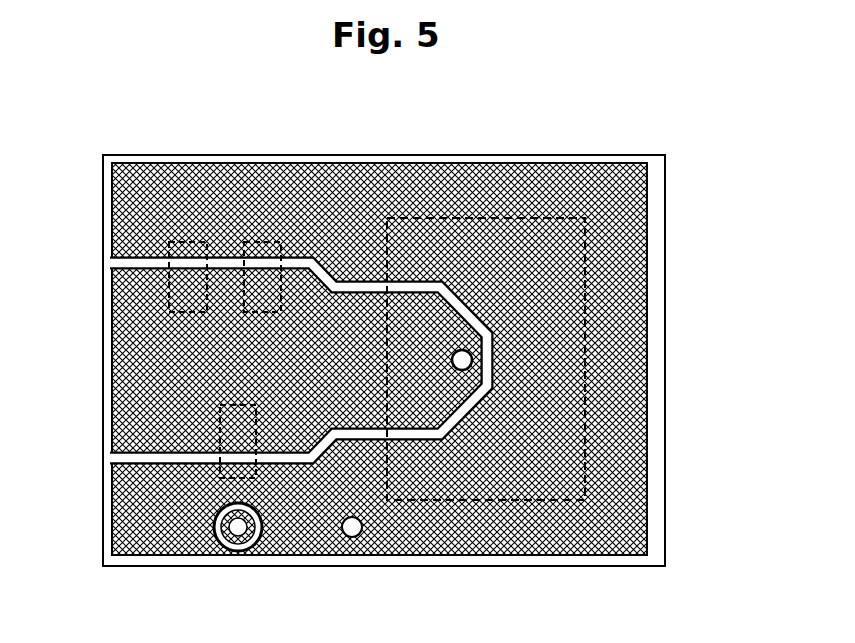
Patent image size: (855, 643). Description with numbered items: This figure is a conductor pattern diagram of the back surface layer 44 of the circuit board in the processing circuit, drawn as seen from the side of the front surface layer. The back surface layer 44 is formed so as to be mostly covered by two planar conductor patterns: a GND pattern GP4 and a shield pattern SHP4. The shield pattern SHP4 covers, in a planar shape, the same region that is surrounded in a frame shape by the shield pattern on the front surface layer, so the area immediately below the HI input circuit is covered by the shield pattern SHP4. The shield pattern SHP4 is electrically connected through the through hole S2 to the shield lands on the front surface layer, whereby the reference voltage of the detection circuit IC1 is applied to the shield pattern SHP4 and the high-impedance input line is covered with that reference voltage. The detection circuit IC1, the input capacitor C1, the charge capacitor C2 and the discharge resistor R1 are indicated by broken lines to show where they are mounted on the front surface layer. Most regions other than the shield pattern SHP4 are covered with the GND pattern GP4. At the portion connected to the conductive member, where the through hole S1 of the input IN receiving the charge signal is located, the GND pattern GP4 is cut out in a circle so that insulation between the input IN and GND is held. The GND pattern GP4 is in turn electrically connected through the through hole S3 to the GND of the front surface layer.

The back surface layer 44 is at (655, 270).
The GND pattern GP4 is at (648, 500).
The shield pattern SHP4 is at (466, 412).
The detection circuit IC1 is at (542, 501).
The through hole S2 is at (462, 360).
The discharge resistor R1 is at (170, 297).
The charge capacitor C2 is at (263, 243).
The input capacitor C1 is at (220, 432).
The input IN is at (218, 542).
The through hole S1 is at (245, 532).
The through hole S3 is at (352, 527).